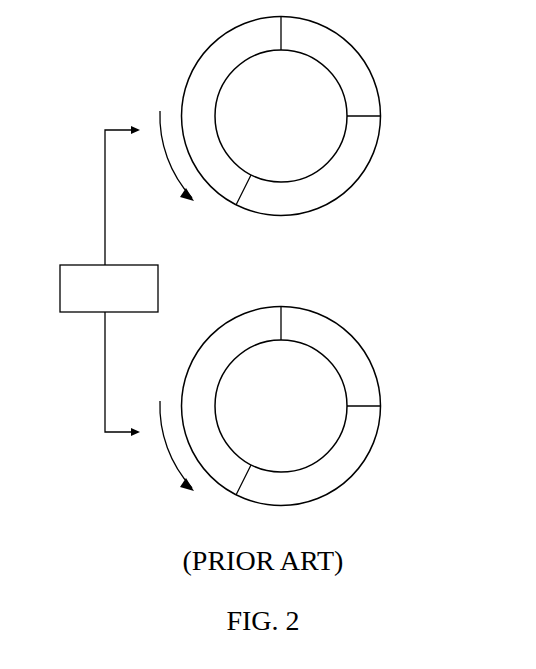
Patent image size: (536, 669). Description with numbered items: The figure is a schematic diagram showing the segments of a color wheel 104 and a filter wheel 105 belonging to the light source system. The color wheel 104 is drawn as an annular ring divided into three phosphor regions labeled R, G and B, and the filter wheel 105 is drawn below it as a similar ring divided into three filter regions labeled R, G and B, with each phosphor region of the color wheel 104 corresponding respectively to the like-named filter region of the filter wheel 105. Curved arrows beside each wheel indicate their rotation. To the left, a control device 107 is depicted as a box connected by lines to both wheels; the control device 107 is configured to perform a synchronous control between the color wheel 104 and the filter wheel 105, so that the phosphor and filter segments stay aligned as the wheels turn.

The color wheel 104 is at (372, 60).
The filter wheel 105 is at (372, 348).
The control device 107 is at (143, 277).